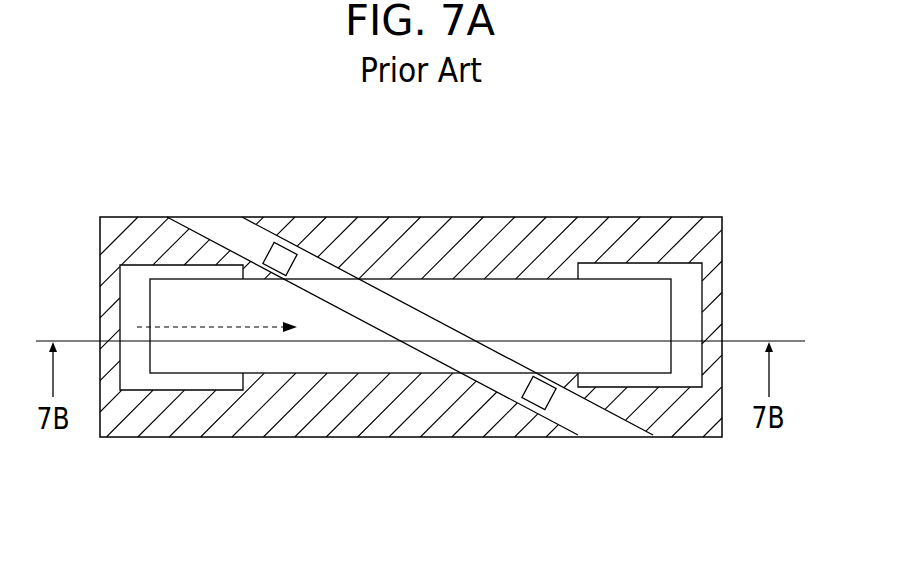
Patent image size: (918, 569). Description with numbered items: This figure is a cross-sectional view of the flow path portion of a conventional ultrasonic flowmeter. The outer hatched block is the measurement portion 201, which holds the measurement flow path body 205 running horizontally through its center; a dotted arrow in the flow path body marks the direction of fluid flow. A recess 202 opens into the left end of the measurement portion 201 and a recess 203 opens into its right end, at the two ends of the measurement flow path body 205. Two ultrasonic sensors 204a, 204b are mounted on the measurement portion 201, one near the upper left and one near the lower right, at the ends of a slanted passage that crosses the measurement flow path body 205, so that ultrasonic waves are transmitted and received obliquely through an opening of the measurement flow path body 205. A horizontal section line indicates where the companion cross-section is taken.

The measurement portion 201 is at (433, 232).
The inlet port 202 is at (135, 302).
The outlet port 203 is at (687, 300).
The ultrasonic sensor 204a is at (283, 262).
The ultrasonic sensor 204b is at (542, 397).
The measurement flow path body 205 is at (612, 300).